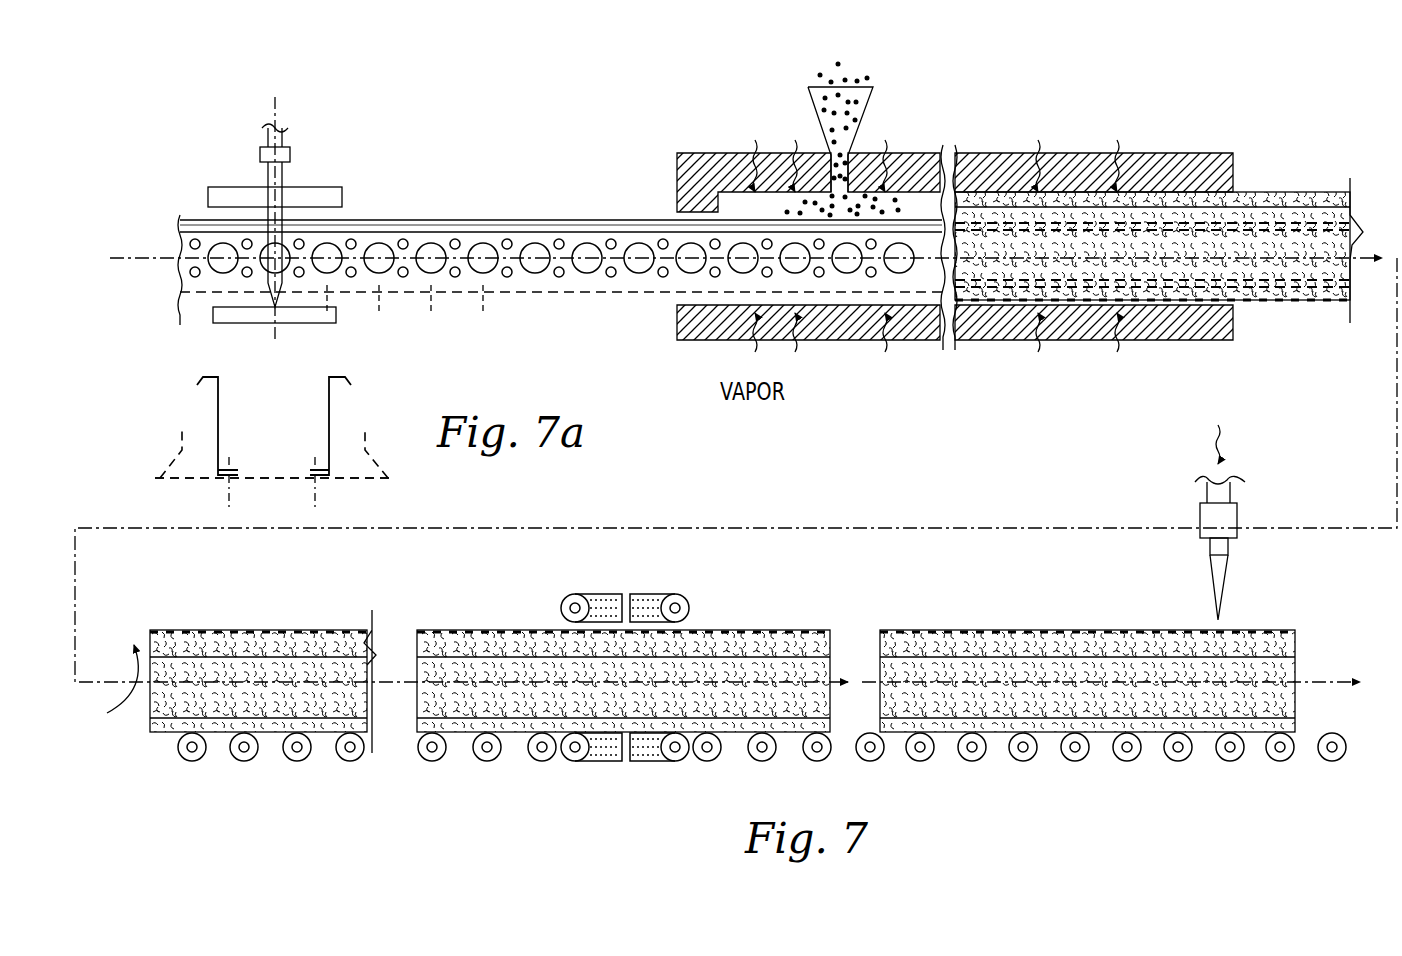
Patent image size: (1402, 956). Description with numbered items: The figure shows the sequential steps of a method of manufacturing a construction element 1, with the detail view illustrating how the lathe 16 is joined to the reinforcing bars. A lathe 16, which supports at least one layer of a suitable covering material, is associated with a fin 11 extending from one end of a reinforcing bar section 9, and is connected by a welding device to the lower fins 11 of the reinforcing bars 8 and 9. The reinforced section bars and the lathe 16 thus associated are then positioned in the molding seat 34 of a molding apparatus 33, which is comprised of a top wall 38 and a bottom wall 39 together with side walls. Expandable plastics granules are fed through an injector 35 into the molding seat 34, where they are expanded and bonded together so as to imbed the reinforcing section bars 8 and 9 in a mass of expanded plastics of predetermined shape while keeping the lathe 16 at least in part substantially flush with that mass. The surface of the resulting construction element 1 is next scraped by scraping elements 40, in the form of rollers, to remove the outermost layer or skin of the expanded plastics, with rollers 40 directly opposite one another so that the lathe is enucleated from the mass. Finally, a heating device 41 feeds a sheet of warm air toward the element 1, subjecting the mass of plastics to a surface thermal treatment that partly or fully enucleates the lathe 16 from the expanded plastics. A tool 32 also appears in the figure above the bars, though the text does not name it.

In FIG. 7, the construction element 1 is at (1302, 188).
In FIG. 7A, the reinforcing bar 8 is at (218, 415).
In FIG. 7, the reinforcing bar section 9 is at (432, 218).
In FIG. 7A, the reinforcing bar section 9 is at (332, 400).
In FIG. 7A, the fin 11 is at (311, 472).
In FIG. 7, the lathe 16 is at (1318, 300).
In FIG. 7A, the lathe 16 is at (205, 480).
In FIG. 7, the punching tool 32 is at (342, 154).
In FIG. 7, the molding apparatus 33 is at (686, 139).
In FIG. 7, the molding seat 34 is at (914, 205).
In FIG. 7, the injector 35 is at (818, 120).
In FIG. 7, the top wall 38 is at (1190, 153).
In FIG. 7, the bottom wall 39 is at (1090, 342).
In FIG. 7, the scraping elements 40 is at (650, 561).
In FIG. 7, the heating device 41 is at (1243, 588).